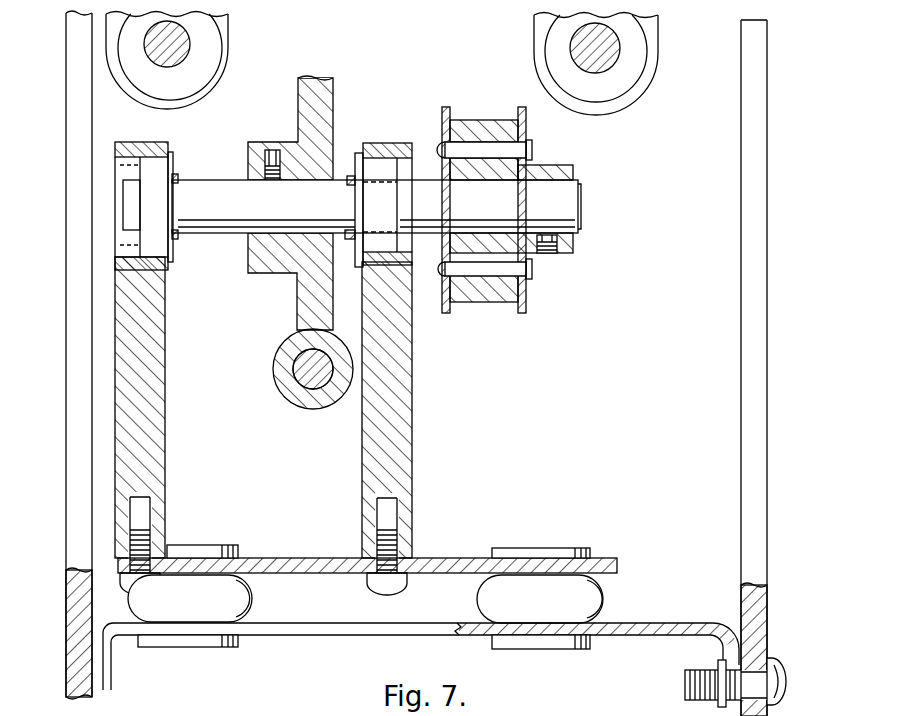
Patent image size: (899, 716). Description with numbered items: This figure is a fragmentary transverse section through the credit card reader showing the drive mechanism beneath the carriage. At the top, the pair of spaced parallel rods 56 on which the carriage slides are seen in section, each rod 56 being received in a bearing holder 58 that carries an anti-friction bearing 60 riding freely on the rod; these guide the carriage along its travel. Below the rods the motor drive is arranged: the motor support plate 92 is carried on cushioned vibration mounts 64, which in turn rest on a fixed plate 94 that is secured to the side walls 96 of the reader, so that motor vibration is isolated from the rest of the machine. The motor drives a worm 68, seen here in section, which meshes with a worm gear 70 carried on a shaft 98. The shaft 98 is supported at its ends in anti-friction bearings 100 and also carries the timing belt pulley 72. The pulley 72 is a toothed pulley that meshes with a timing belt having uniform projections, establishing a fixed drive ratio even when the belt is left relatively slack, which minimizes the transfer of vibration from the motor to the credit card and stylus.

The rods 56 is at (178, 58).
The bearing holders 58 is at (214, 80).
The anti-friction bearings 60 is at (214, 46).
The vibration mounts 64 is at (235, 597).
The worm 68 is at (303, 403).
The worm gear 70 is at (297, 304).
The timing belt pulley 72 is at (527, 122).
The motor support plate 92 is at (279, 558).
The fixed plate 94 is at (322, 630).
The side walls 96 is at (66, 518).
The shaft 98 is at (223, 215).
The anti-friction bearings 100 is at (162, 213).